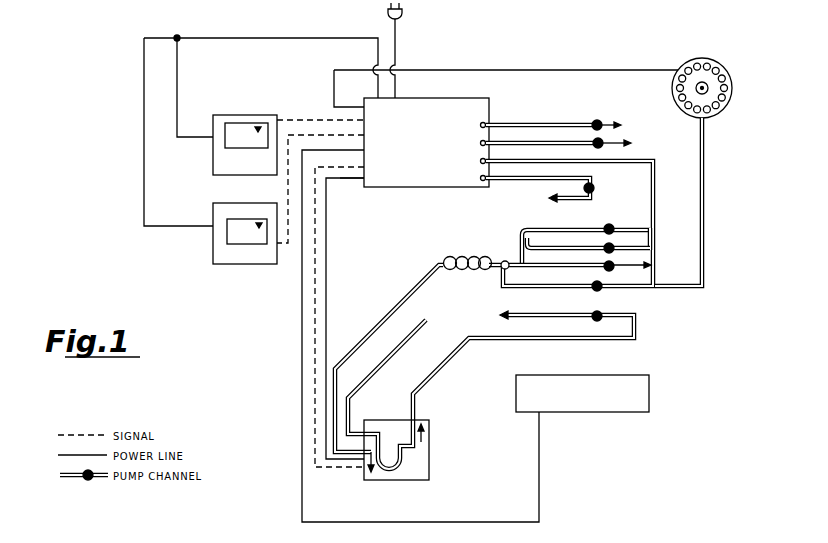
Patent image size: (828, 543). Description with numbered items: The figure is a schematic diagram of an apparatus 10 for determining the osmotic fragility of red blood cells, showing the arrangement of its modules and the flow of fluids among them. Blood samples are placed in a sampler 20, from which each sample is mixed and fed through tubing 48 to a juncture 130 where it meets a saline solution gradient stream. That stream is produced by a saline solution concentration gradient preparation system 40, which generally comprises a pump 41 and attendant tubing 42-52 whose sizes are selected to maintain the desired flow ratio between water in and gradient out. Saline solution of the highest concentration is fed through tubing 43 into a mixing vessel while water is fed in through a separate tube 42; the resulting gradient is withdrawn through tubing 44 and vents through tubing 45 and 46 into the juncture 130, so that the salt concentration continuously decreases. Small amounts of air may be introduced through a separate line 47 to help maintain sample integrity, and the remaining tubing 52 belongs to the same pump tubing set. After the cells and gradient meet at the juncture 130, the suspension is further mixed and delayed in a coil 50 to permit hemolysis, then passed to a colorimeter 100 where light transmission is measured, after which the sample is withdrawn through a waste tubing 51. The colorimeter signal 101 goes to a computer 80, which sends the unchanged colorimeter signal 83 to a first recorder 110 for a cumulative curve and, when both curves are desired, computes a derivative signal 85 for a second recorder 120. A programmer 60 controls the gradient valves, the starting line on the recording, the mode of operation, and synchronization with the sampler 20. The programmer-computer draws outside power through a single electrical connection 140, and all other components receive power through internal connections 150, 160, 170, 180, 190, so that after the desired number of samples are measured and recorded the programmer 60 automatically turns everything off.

The apparatus 10 is at (535, 60).
The sampler 20 is at (730, 96).
The saline solution concentration gradient preparation system 40 is at (699, 298).
The pump 41 is at (636, 405).
The water tube 42 is at (530, 125).
The saline solution tubing 43 is at (556, 147).
The gradient withdrawal tubing 44 is at (653, 172).
The gradient vent tubing 45 is at (535, 231).
The gradient vent tubing 46 is at (579, 248).
The air line 47 is at (639, 268).
The sample tubing 48 is at (705, 224).
The mixing coil 50 is at (463, 256).
The waste tubing 51 is at (446, 364).
The tubing 52 is at (522, 180).
The programmer 60 is at (466, 98).
The computer 80 is at (357, 188).
The unchanged colorimeter signal 83 is at (310, 118).
The derivative signal 85 is at (287, 188).
The colorimeter 100 is at (431, 459).
The colorimeter signal 101 is at (318, 468).
The first recorder 110 is at (212, 153).
The second recorder 120 is at (212, 252).
The juncture 130 is at (500, 270).
The electrical connection 140 is at (399, 36).
The internal power connection 150 is at (326, 309).
The internal power connection 160 is at (178, 79).
The internal power connection 170 is at (143, 87).
The internal power connection 180 is at (605, 70).
The internal power connection 190 is at (262, 38).